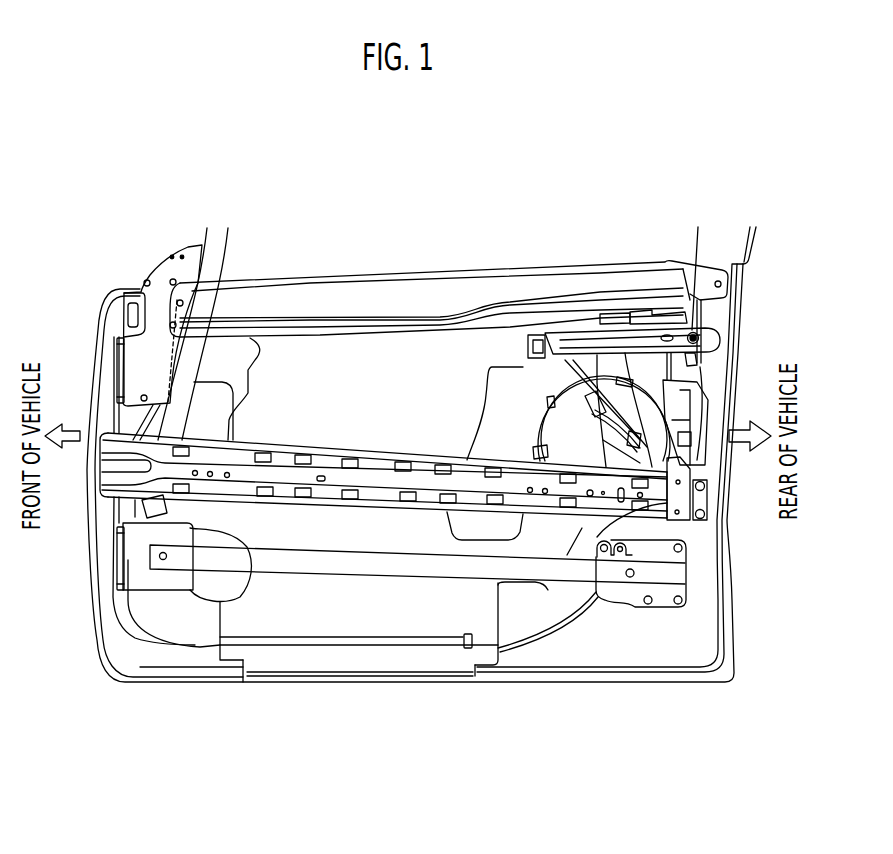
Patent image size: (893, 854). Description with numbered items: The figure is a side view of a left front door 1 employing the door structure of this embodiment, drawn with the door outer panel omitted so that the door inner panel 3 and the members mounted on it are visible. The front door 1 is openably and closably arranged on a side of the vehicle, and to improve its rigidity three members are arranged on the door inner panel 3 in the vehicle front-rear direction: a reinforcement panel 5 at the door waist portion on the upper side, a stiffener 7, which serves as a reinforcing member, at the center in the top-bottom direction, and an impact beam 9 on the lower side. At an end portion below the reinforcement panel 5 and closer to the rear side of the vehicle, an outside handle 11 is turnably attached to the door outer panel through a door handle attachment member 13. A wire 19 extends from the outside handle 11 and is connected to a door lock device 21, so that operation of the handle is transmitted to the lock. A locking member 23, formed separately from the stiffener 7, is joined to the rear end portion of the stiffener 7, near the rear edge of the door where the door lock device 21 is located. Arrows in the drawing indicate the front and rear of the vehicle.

The front door 1 is at (248, 200).
The door inner panel 3 is at (610, 649).
The reinforcement panel 5 is at (352, 300).
The stiffener 7 is at (312, 460).
The impact beam 9 is at (342, 565).
The outside handle 11 is at (612, 348).
The door handle attachment member 13 is at (560, 330).
The wire 19 is at (538, 414).
The door lock device 21 is at (648, 376).
The locking member 23 is at (692, 492).